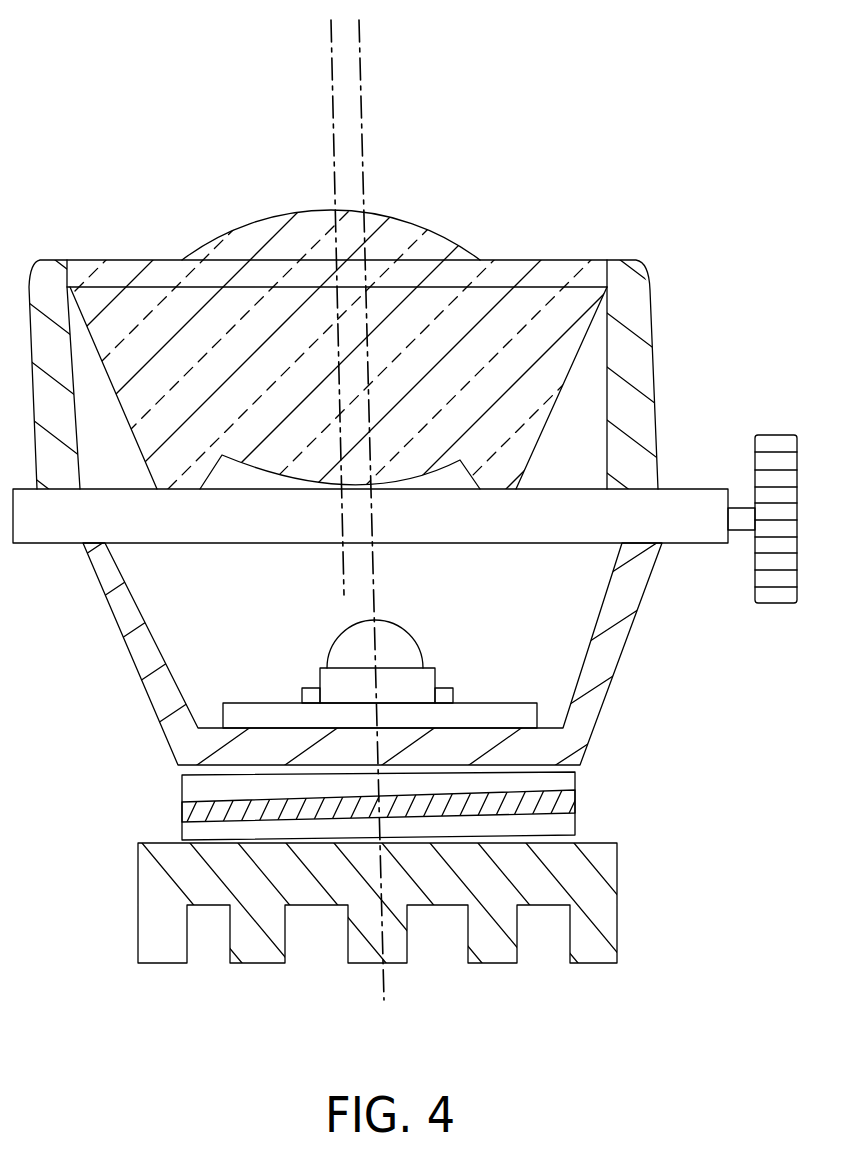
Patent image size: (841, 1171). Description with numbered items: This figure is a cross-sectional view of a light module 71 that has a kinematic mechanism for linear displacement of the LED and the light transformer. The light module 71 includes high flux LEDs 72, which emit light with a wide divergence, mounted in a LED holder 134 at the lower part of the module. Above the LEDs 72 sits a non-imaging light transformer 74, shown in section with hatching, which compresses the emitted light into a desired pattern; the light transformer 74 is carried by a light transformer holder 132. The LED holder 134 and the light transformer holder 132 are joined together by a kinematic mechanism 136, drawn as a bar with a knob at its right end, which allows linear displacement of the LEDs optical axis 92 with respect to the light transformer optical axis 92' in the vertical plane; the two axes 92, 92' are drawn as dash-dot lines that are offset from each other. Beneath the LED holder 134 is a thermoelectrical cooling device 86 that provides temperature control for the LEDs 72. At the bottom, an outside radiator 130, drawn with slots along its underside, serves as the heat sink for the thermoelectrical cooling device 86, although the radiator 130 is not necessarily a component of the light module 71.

The light module 71 is at (482, 130).
The LEDs optical axis 92 is at (388, 507).
The light transformer optical axis 92' is at (306, 305).
The light transformer 74 is at (157, 322).
The light transformer holder 132 is at (627, 358).
The kinematic mechanism 136 is at (685, 518).
The LED holder 134 is at (623, 657).
The high flux LEDs 72 is at (347, 683).
The thermoelectrical cooling device 86 is at (180, 803).
The outside radiator 130 is at (163, 890).